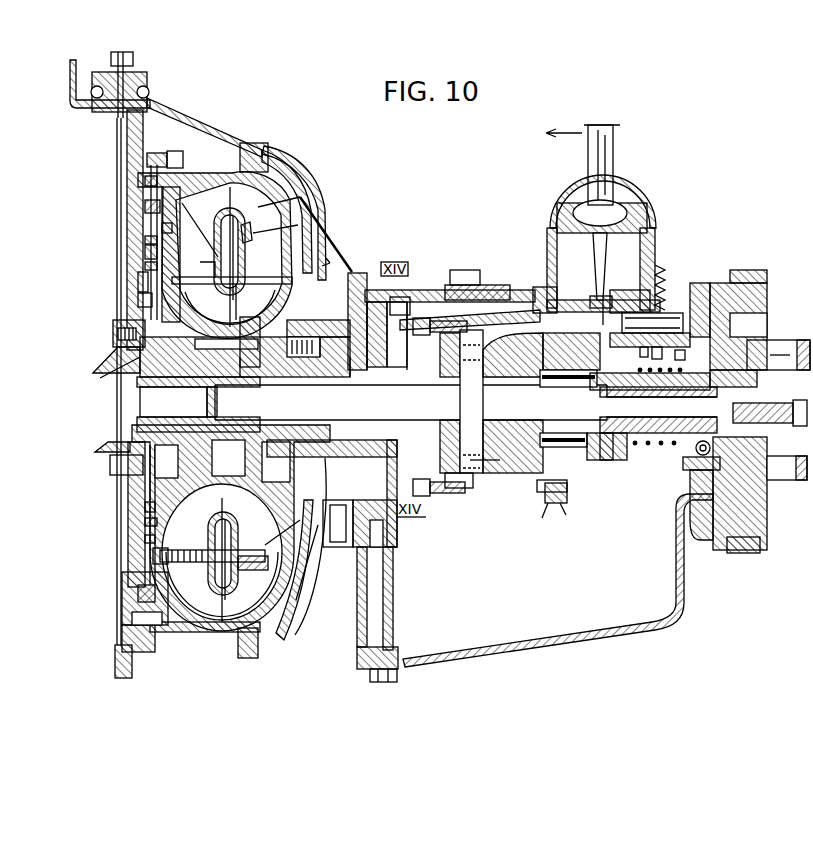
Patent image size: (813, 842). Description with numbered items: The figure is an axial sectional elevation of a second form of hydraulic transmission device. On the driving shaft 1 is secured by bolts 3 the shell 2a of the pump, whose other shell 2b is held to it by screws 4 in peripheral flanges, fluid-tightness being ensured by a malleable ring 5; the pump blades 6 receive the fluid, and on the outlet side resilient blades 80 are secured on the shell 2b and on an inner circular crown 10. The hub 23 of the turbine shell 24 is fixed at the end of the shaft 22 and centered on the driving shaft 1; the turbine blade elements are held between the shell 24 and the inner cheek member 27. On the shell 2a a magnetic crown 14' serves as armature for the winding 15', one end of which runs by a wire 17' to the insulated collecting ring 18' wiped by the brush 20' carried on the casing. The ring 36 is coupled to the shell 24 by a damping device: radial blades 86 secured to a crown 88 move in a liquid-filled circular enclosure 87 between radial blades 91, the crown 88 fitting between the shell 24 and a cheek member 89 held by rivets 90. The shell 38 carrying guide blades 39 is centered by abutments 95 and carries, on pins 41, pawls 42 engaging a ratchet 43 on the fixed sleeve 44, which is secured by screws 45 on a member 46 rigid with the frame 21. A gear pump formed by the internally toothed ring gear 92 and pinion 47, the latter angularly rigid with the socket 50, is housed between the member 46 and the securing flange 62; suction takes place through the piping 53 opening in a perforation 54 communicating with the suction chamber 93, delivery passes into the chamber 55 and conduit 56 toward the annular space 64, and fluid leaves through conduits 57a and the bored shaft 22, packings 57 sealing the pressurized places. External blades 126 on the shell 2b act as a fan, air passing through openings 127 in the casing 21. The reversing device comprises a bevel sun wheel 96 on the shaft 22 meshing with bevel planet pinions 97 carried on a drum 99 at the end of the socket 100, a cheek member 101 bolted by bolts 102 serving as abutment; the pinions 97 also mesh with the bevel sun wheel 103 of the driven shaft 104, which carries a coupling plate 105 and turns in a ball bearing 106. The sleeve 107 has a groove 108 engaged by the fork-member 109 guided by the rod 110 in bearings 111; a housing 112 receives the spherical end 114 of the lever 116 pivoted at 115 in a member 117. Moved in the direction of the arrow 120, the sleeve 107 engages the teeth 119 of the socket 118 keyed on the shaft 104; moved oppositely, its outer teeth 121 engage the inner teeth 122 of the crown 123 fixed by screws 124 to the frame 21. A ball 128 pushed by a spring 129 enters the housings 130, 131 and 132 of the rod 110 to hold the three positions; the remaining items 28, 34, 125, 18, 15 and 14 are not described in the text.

The fixed frame 21 is at (72, 104).
The screws 4 is at (158, 160).
The ring 5 is at (116, 168).
The ring 36 is at (172, 188).
The crown or ring of magnetic material 14' is at (116, 177).
The winding of the electromagnet 15' is at (117, 202).
The shell of the turbine 24 is at (162, 228).
The wire 17' is at (116, 240).
The crown or ring 88 is at (145, 252).
The shell of the pump 2a is at (150, 266).
The cheek member 89 is at (145, 266).
The brush 20' is at (115, 292).
The rivets 90 is at (138, 302).
The collecting ring 18' is at (114, 335).
The bolts 3 is at (112, 358).
The conduits 57a is at (145, 370).
The hub 23 is at (145, 385).
The abutments 95 is at (262, 322).
The shell of the pump 2b is at (230, 180).
The inner cheek member 27 is at (224, 224).
The radial rigid blades 86 is at (200, 230).
The circular enclosure 87 is at (214, 262).
The bar 28 is at (205, 284).
The pins 41 is at (226, 300).
The blades of the pump 6 is at (252, 260).
The blades 126 is at (284, 186).
The openings 127 is at (277, 160).
The blades 80 is at (259, 207).
The inner circular crown 10 is at (255, 233).
The guide blades 39 is at (330, 263).
The shell of the guide vane ring 38 is at (305, 300).
The fluid-tight packings 57 is at (388, 398).
The pawls 42 is at (232, 377).
The ratchet 43 is at (219, 404).
The sleeve 44 is at (262, 377).
The annular space 64 is at (283, 377).
The socket 50 is at (318, 360).
The shaft 22 is at (335, 375).
The pinion 47 is at (352, 367).
The clamp 34 is at (372, 370).
The conduit 56 is at (412, 380).
The chamber 55 is at (447, 380).
The securing flange 62 is at (398, 330).
The member 46 is at (390, 296).
The screws 45 is at (405, 300).
The internally toothed ring gear 92 is at (452, 298).
The drum 99 is at (500, 348).
The inner teeth 122 is at (535, 345).
The bevel sun wheel 103 is at (500, 378).
The socket 100 is at (578, 385).
The sleeve 107 is at (585, 378).
The fork-member 109 is at (658, 404).
The teeth 119 is at (640, 455).
The socket 118 is at (740, 405).
The ball bearing 106 is at (750, 552).
The coupling plate 105 is at (775, 480).
The driven shaft 104 is at (695, 450).
The housing 130 is at (650, 402).
The groove 108 is at (610, 462).
The arrow 120 is at (600, 462).
The rod 110 is at (655, 318).
The housing 131 is at (631, 355).
The ball 128 is at (661, 355).
The housing 132 is at (673, 362).
The bearings 111 is at (540, 292).
The outer teeth 121 is at (578, 312).
The pivot 115 is at (630, 200).
The lever 116 is at (614, 132).
The direction arrow 125 is at (583, 126).
The member 117 is at (655, 232).
The end of the lever 114 is at (612, 298).
The housing 112 is at (666, 285).
The spring 129 is at (650, 312).
The bevel sun wheel 96 is at (440, 417).
The cheek member 101 is at (346, 493).
The bolts 102 is at (469, 484).
The suction chamber 93 is at (495, 462).
The bevel planet pinions 97 is at (542, 493).
The screws 124 is at (577, 507).
The crown 123 is at (552, 503).
The perforation 54 is at (340, 548).
The piping 53 is at (360, 648).
The driving shaft 1 is at (103, 455).
The bearing 18 is at (121, 511).
The radial blades 91 is at (145, 539).
The bearing 15 is at (128, 598).
The bolt 14 is at (125, 613).